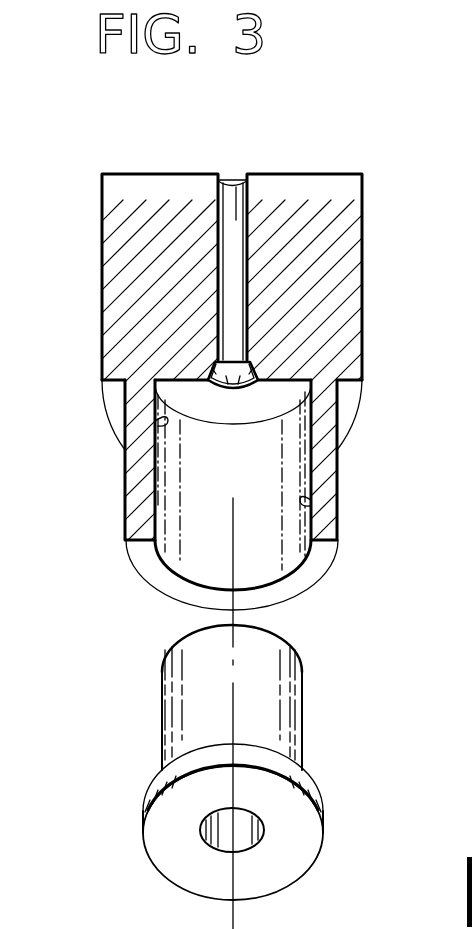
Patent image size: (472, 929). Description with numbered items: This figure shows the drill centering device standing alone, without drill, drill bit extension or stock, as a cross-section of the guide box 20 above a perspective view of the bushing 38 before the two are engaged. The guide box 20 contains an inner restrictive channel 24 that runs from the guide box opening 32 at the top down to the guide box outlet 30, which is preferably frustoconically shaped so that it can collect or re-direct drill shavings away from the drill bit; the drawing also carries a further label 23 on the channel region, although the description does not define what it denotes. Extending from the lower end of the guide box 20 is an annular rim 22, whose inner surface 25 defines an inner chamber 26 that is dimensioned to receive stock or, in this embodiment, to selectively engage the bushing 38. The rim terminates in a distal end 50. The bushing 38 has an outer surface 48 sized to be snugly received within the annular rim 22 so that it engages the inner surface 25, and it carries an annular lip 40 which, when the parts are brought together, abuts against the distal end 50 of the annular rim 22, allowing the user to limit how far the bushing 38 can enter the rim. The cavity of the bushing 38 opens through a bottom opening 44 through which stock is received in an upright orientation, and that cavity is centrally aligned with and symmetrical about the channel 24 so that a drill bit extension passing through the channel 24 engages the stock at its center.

The guide box 20 is at (350, 253).
The annular rim 22 is at (137, 465).
The bore 23 is at (220, 252).
The inner restrictive channel 24 is at (236, 187).
The inner surface 25 is at (160, 421).
The inner chamber 26 is at (180, 507).
The guide box outlet 30 is at (233, 388).
The guide box opening 32 is at (230, 183).
The bushing 38 is at (256, 800).
The annular lip 40 is at (323, 822).
The bottom opening 44 is at (202, 840).
The outer surface 48 is at (303, 712).
The distal end 50 is at (320, 557).